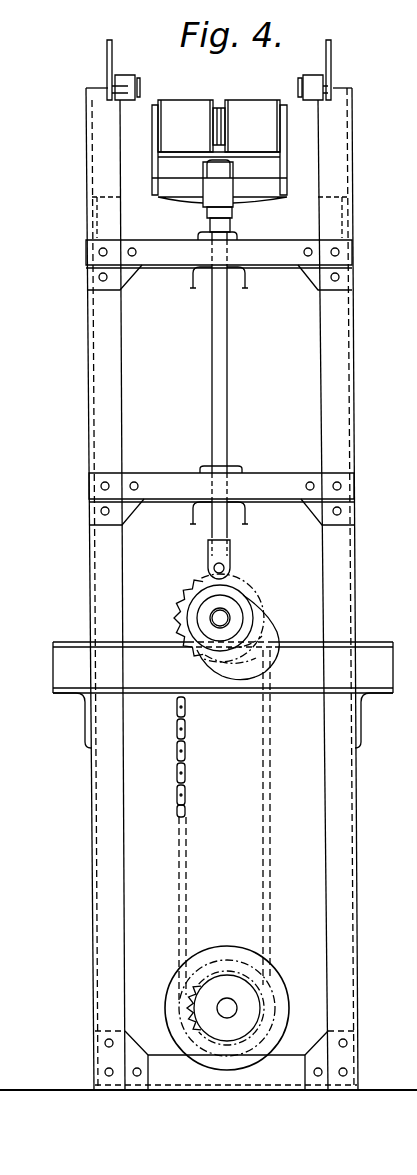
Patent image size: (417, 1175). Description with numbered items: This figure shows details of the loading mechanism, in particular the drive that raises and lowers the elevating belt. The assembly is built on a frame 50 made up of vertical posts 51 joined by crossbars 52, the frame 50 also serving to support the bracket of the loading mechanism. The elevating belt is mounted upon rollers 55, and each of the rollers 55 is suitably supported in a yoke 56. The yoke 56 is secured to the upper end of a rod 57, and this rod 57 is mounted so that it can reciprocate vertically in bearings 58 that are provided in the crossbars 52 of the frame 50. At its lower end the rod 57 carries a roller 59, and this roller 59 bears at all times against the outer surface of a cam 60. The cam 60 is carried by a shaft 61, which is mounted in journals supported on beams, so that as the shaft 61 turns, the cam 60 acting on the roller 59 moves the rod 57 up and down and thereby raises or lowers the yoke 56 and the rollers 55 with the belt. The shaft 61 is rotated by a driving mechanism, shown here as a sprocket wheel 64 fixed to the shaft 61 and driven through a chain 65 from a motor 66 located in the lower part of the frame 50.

The frame 50 is at (340, 140).
The vertical posts 51 is at (352, 393).
The crossbars 52 is at (165, 256).
The rollers 55 is at (190, 108).
The yoke 56 is at (284, 148).
The rod 57 is at (222, 332).
The bearings 58 is at (236, 236).
The roller 59 is at (238, 575).
The cam 60 is at (233, 593).
The shaft 61 is at (220, 618).
The sprocket wheel 64 is at (190, 597).
The chain 65 is at (188, 850).
The motor 66 is at (265, 982).